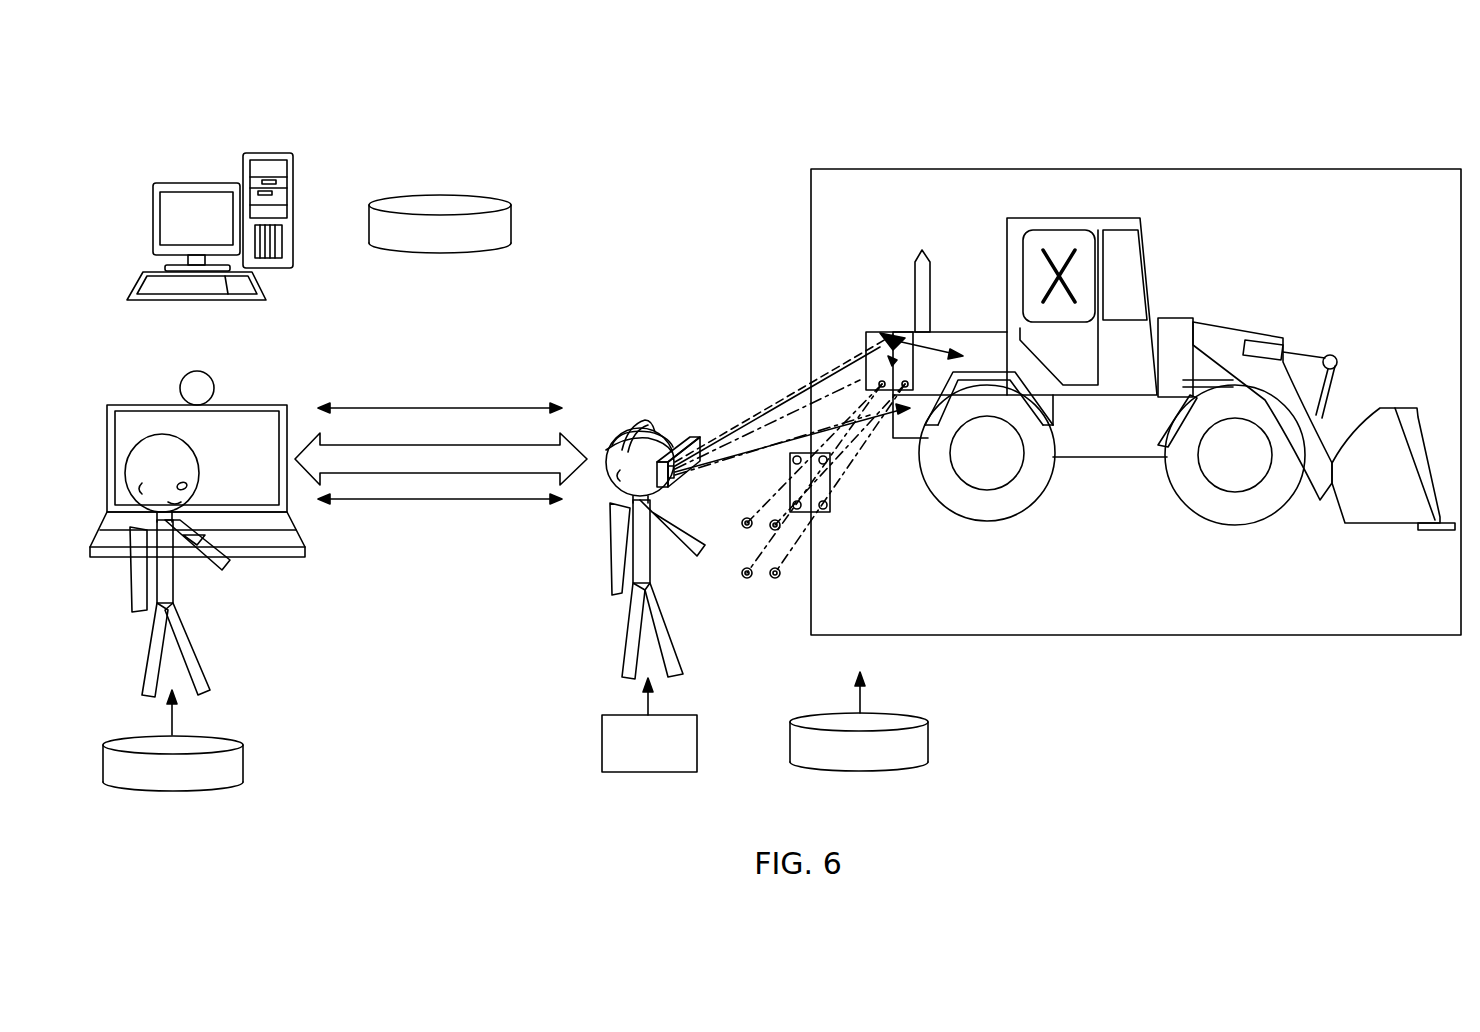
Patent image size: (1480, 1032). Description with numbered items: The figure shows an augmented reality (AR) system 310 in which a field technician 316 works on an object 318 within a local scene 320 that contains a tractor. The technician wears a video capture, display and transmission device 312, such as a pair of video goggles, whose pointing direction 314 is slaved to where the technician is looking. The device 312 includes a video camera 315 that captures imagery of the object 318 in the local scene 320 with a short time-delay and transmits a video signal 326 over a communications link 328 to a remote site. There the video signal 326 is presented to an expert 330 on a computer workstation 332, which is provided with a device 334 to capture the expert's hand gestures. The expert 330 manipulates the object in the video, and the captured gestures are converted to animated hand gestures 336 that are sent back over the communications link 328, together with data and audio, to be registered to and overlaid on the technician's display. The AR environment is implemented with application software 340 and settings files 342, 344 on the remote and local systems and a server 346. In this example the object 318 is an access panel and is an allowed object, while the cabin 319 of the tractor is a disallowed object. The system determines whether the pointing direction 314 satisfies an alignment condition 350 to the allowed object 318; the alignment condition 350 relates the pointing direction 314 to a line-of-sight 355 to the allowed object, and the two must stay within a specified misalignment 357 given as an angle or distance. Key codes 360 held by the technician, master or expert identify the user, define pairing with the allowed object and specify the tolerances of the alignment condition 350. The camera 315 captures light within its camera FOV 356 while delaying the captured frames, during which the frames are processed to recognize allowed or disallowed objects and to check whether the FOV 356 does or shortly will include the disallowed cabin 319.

The AR system 310 is at (1356, 98).
The video capture, display and transmission device 312 is at (637, 420).
The pointing direction 314 is at (768, 445).
The video camera 315 is at (678, 478).
The field technician 316 is at (607, 555).
The object 318 is at (832, 486).
The cabin 319 is at (1075, 218).
The local scene 320 is at (1143, 169).
The video signal 326 is at (440, 538).
The communications link 328 is at (443, 445).
The expert 330 is at (187, 613).
The computer workstation 332 is at (160, 405).
The device 334 is at (198, 370).
The animated hand gestures 336 is at (440, 343).
The application software 340 is at (512, 226).
The settings file 342 is at (244, 762).
The settings file 344 is at (930, 742).
The server 346 is at (197, 183).
The alignment condition 350 is at (905, 332).
The line-of-sight 355 is at (830, 395).
The camera FOV 356 is at (775, 405).
The misalignment 357 is at (935, 340).
The key codes 360 is at (486, 383).